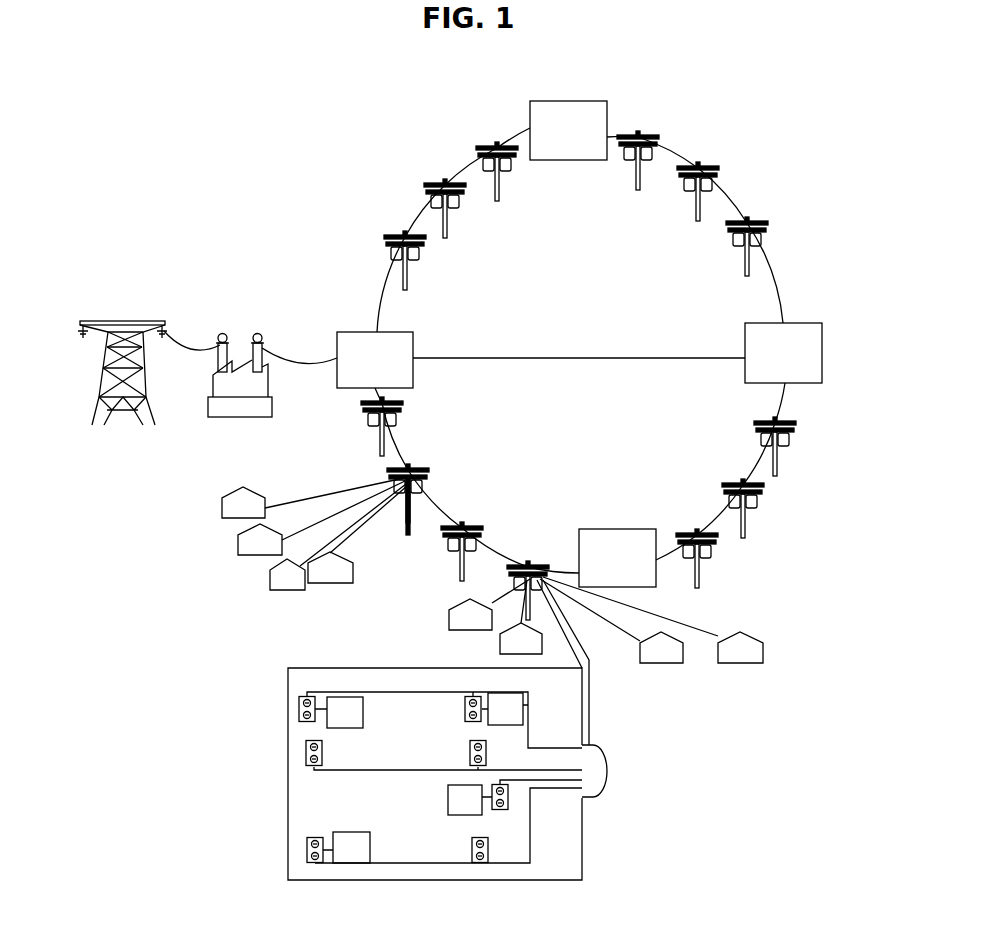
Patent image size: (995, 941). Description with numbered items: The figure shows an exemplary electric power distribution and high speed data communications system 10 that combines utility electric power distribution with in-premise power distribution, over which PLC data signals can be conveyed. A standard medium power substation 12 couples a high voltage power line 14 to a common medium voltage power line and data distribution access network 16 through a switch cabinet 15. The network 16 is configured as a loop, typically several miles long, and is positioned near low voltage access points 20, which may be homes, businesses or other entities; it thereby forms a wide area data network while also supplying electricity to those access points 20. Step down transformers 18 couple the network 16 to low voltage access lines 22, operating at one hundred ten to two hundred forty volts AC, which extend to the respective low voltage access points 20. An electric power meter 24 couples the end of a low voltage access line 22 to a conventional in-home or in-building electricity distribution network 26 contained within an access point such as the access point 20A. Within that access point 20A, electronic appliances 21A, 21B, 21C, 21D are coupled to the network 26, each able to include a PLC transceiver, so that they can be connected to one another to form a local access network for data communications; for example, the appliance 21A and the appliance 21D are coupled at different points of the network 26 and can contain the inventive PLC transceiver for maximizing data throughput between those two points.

The electric power distribution and high speed data communications system 10 is at (114, 175).
The medium power substation 12 is at (241, 334).
The high voltage power line 14 is at (130, 320).
The switch cabinet 15 is at (606, 111).
The medium voltage power line and data distribution access network 16 is at (671, 186).
The step down transformer 18 is at (420, 467).
The low voltage access point 20 is at (237, 522).
The access point 20A is at (288, 702).
The electronic appliance 21A is at (363, 708).
The electronic appliance 21B is at (523, 703).
The electronic appliance 21C is at (448, 795).
The electronic appliance 21D is at (370, 850).
The low voltage access line 22 is at (327, 491).
The electric power meter 24 is at (607, 778).
The in-building electricity distribution network 26 is at (358, 770).